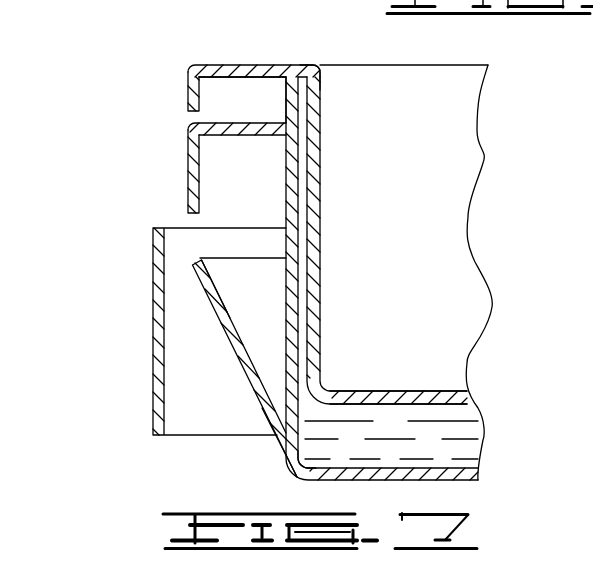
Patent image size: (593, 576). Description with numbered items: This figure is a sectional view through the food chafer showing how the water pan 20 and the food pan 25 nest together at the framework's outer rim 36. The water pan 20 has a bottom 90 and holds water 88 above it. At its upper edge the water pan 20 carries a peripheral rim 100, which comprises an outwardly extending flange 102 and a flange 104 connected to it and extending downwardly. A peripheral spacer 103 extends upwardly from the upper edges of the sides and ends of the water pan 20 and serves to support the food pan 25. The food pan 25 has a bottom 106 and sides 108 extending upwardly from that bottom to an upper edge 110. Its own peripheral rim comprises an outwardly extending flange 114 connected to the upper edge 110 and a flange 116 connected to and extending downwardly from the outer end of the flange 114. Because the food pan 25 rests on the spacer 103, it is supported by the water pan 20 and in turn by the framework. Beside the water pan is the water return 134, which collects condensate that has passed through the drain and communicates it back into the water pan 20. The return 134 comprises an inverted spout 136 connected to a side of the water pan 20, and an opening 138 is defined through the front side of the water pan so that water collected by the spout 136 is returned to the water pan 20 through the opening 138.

The peripheral rim 100 is at (222, 107).
The outwardly extending flange 114 is at (237, 65).
The flange 116 is at (187, 97).
The upper edge 110 is at (308, 68).
The peripheral spacer 103 is at (289, 106).
The outwardly extending flange 102 is at (245, 137).
The flange 104 is at (188, 190).
The water pan 20 is at (322, 154).
The food pan 25 is at (425, 240).
The sides 108 is at (322, 252).
The bottom 106 is at (440, 393).
The bottom 90 is at (443, 472).
The water 88 is at (337, 445).
The outer rim 36 is at (153, 399).
The water return 134 is at (232, 354).
The inverted spout 136 is at (218, 315).
The opening 138 is at (295, 409).